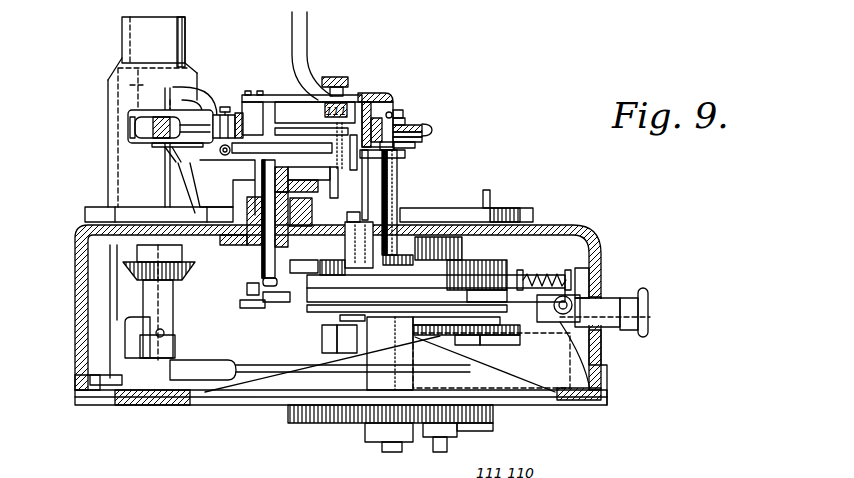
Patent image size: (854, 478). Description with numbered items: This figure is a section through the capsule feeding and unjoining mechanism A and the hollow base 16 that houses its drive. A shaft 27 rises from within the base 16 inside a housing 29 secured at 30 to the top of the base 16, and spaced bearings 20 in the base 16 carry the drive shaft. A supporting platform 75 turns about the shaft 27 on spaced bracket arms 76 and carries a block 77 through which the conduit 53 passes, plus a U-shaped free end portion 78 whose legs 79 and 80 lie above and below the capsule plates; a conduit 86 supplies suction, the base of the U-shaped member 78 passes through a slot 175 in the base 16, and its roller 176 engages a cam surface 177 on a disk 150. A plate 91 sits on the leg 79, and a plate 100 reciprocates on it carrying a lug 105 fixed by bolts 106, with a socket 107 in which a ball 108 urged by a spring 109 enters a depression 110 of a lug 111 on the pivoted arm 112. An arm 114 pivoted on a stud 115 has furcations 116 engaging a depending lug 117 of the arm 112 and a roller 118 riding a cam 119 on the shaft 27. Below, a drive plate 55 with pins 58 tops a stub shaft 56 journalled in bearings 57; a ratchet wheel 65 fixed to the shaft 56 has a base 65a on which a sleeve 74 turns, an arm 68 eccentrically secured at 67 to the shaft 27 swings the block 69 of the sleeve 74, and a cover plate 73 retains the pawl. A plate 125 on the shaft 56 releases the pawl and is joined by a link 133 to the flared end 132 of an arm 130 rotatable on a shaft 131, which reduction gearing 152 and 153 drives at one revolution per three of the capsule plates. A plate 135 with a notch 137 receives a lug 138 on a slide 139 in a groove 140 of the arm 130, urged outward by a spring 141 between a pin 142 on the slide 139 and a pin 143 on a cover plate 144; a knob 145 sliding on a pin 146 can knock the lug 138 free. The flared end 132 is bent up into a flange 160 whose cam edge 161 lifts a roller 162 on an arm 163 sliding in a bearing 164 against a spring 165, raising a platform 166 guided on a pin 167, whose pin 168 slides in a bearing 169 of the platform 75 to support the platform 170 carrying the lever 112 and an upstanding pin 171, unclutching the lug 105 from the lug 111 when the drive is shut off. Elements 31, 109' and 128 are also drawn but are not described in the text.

The base 16 is at (609, 378).
The bearings 20 is at (106, 322).
The shaft 27 is at (155, 243).
The housing 29 is at (122, 42).
The securing point 30 is at (90, 212).
The bevel gear 31 is at (124, 266).
The conduit 53 is at (292, 24).
The drive plate 55 is at (530, 207).
The stub shaft 56 is at (434, 452).
The bearings 57 is at (520, 375).
The pins 58 is at (490, 194).
The ratchet wheel 65 is at (508, 338).
The base 65a is at (478, 345).
The eccentric connection 67 is at (157, 372).
The arm 68 is at (246, 372).
The block 69 is at (335, 345).
The cover plate 73 is at (330, 335).
The sleeve 74 is at (432, 341).
The supporting platform 75 is at (252, 165).
The bracket arms 76 is at (110, 82).
The block 77 is at (346, 82).
The U-shaped free end portion 78 is at (399, 196).
The upper leg 79 is at (424, 152).
The lower leg 80 is at (462, 247).
The conduit 86 is at (339, 190).
The plate 91 is at (424, 142).
The plate 100 is at (414, 128).
The lug 105 is at (402, 124).
The bolts 106 is at (428, 130).
The socket 107 is at (408, 127).
The ball 108 is at (400, 121).
The spring 109 is at (380, 71).
The cap 109' is at (439, 138).
The depression 110 is at (398, 114).
The lug 111 is at (394, 112).
The pivoted arm 112 is at (368, 100).
The arm 114 is at (212, 118).
The stud 115 is at (229, 106).
The furcations 116 is at (262, 102).
The depending lug 117 is at (249, 118).
The roller 118 is at (140, 127).
The cam 119 is at (128, 117).
The plate 125 is at (470, 316).
The pin 128 is at (350, 320).
The arm 130 is at (515, 265).
The shaft 131 is at (386, 452).
The flared end portion 132 is at (283, 303).
The link 133 is at (360, 310).
The plate 135 is at (606, 300).
The notch 137 is at (601, 292).
The lug 138 is at (638, 292).
The slide 139 is at (560, 322).
The groove 140 is at (495, 290).
The spring 141 is at (570, 270).
The pin 142 is at (537, 279).
The pin 143 is at (585, 283).
The cover plate 144 is at (576, 333).
The knob 145 is at (648, 295).
The pin 146 is at (603, 345).
The disk 150 is at (436, 285).
The reduction gearing 152 is at (470, 423).
The reduction gearing 153 is at (320, 424).
The flange 160 is at (272, 288).
The cam shaped upper edge 161 is at (246, 310).
The roller 162 is at (250, 292).
The arm 163 is at (258, 275).
The bearing 164 is at (241, 247).
The spring 165 is at (312, 210).
The platform 166 is at (302, 178).
The guide pin 167 is at (330, 236).
The upstanding pin 168 is at (400, 184).
The bearing 169 is at (330, 150).
The platform 170 is at (290, 140).
The upstanding pin 171 is at (280, 96).
The slot 175 is at (440, 212).
The roller 176 is at (325, 273).
The cam surface 177 is at (400, 263).
The capsule feeding and unjoining mechanism A is at (332, 78).